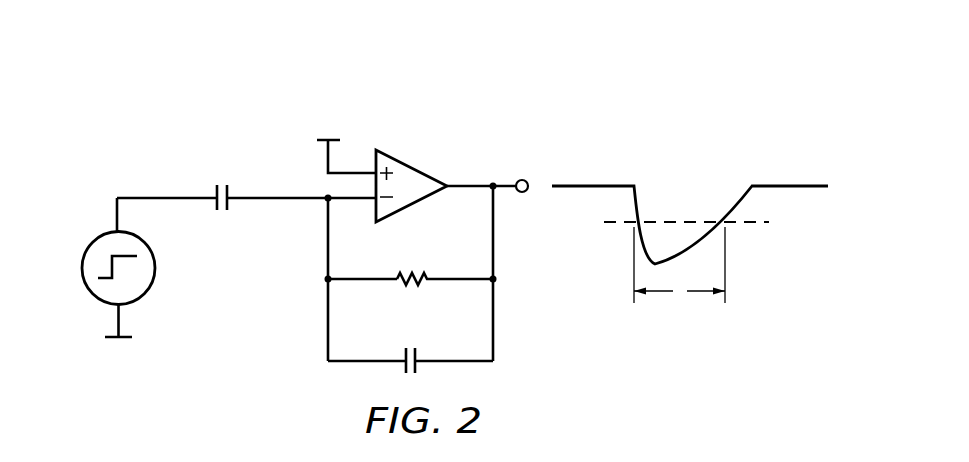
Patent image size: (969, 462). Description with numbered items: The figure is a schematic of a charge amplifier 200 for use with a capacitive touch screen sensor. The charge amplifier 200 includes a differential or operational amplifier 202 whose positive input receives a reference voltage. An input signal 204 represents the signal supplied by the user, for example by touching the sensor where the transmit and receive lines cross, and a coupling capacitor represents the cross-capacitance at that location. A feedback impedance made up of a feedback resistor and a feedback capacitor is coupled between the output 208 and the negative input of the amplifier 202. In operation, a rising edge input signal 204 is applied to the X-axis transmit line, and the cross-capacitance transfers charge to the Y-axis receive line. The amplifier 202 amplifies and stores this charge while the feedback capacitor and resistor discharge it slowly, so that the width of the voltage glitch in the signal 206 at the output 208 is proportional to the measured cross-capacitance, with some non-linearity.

The charge amplifier 200 is at (255, 67).
The operational amplifier 202 is at (412, 163).
The input signal 204 is at (82, 268).
The output signal 206 is at (785, 186).
The output 208 is at (525, 178).